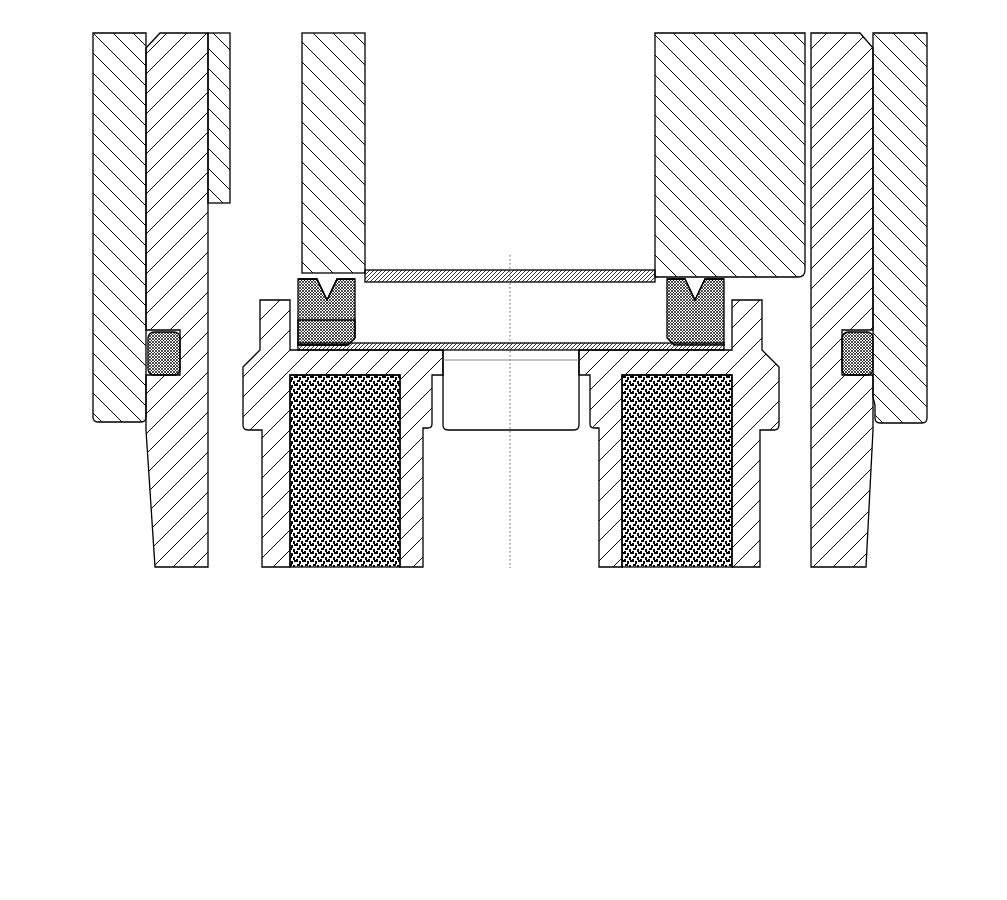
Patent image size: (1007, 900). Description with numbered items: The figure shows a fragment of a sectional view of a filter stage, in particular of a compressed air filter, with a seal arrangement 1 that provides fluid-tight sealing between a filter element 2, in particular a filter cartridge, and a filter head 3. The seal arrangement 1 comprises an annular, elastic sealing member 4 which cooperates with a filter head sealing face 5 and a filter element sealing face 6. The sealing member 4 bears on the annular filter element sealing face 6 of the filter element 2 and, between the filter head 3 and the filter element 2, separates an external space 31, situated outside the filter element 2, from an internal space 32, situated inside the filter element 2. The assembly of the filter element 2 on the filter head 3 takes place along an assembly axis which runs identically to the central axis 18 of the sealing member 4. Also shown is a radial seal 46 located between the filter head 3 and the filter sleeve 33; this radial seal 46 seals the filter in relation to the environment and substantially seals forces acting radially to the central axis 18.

The seal arrangement 1 is at (491, 140).
The filter element 2 is at (285, 543).
The filter head 3 is at (338, 250).
The sealing member 4 is at (310, 297).
The filter head sealing face 5 is at (318, 292).
The filter element sealing face 6 is at (311, 340).
The central axis 18 is at (510, 255).
The external space 31 is at (237, 503).
The internal space 32 is at (460, 543).
The filter sleeve 33 is at (170, 455).
The radial seal 46 is at (157, 357).